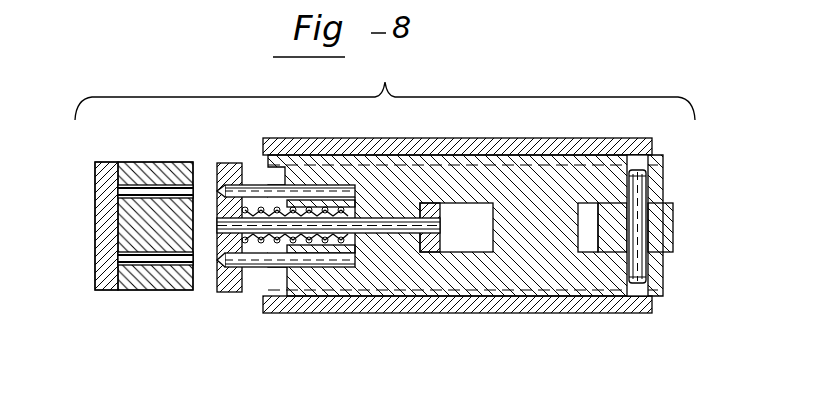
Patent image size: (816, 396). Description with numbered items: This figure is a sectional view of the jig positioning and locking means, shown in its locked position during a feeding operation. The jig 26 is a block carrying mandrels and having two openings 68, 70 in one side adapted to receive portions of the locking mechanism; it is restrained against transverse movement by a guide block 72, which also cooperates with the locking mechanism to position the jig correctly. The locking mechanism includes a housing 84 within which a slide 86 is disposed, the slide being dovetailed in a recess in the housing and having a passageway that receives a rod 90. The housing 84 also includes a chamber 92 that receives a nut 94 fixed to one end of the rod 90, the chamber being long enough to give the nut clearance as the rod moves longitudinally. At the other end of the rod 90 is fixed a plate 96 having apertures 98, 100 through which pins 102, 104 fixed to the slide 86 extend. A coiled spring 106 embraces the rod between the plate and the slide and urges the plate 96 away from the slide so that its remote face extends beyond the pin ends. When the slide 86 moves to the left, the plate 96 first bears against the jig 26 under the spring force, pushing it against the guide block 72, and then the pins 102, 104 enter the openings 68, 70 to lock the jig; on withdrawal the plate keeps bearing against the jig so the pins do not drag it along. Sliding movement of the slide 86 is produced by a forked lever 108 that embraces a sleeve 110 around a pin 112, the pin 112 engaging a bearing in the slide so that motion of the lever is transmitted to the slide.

The jig 26 is at (147, 162).
The opening 70 is at (178, 188).
The guide block 72 is at (95, 250).
The opening 68 is at (160, 258).
The housing 84 is at (505, 316).
The slide 86 is at (573, 284).
The rod 90 is at (382, 222).
The chamber 92 is at (487, 243).
The nut 94 is at (443, 214).
The plate 96 is at (237, 292).
The aperture 98 is at (226, 264).
The aperture 100 is at (225, 196).
The pin 102 is at (287, 266).
The pin 104 is at (248, 186).
The coiled spring 106 is at (272, 207).
The forked lever 108 is at (675, 207).
The sleeve 110 is at (660, 222).
The pin 112 is at (648, 268).